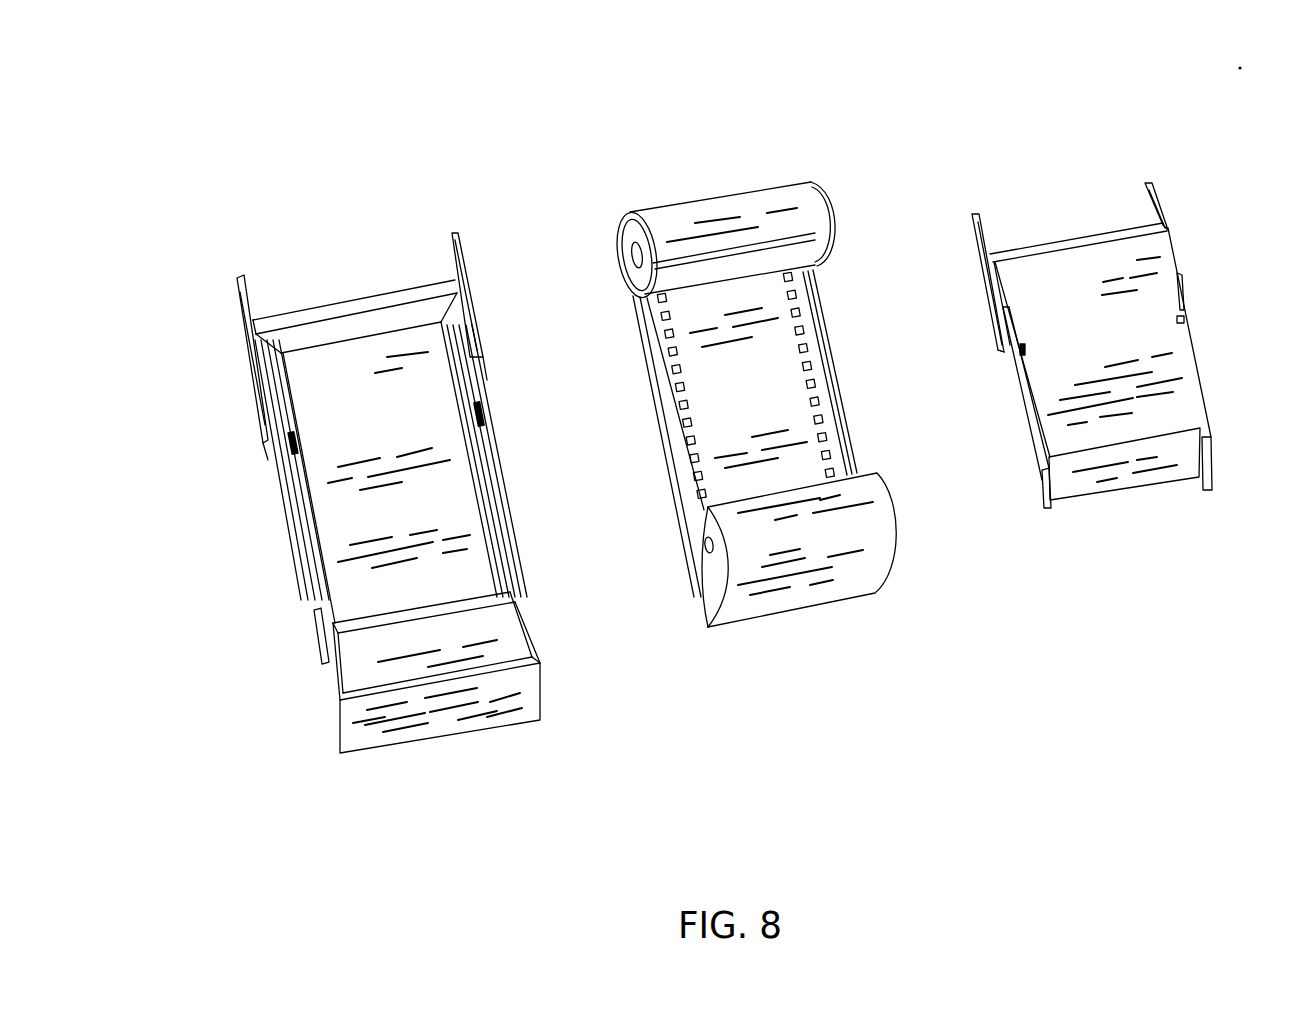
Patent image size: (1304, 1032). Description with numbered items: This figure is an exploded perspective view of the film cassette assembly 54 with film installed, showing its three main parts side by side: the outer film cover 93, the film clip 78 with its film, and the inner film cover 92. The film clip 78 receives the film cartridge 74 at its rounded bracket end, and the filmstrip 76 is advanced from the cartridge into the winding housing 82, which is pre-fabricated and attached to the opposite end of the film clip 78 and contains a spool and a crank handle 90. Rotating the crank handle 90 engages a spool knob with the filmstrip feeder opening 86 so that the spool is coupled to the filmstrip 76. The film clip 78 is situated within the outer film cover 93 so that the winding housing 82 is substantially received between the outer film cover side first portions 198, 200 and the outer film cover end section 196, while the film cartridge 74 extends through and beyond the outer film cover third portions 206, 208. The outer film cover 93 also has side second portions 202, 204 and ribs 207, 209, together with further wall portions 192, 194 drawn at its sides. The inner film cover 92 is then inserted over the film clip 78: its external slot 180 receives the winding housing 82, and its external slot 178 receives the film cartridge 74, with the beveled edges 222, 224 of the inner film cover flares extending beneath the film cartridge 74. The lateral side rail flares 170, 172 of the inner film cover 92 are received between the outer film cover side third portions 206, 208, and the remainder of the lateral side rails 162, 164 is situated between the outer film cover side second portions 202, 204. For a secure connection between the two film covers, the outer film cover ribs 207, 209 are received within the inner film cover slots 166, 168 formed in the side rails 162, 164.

The outer film cover 93 is at (340, 192).
The outer film cover third portion 206 is at (472, 277).
The outer film cover third portion 208 is at (240, 318).
The outer film cover rib 209 is at (295, 440).
The outer film cover rib 207 is at (478, 415).
The outer film cover side second portion 204 is at (282, 490).
The outer film cover side second portion 202 is at (500, 428).
The side wall 194 is at (292, 522).
The side wall 192 is at (508, 487).
The outer film cover side first portion 198 is at (535, 618).
The outer film cover side first portion 200 is at (333, 668).
The outer film cover end section 196 is at (447, 722).
The film cassette assembly 54 is at (903, 665).
The film clip 78 is at (715, 210).
The film cartridge 74 is at (630, 285).
The filmstrip 76 is at (763, 407).
The filmstrip feeder opening 86 is at (818, 380).
The winding housing 82 is at (798, 594).
The crank handle 90 is at (707, 548).
The inner film cover 92 is at (1052, 130).
The external slot 178 is at (1090, 232).
The beveled edge 224 is at (985, 230).
The beveled edge 222 is at (1163, 205).
The lateral side rail flare 170 is at (982, 270).
The inner film cover slot 166 is at (1027, 350).
The lateral side rail 162 is at (1028, 440).
The lateral side rail flare 172 is at (1182, 245).
The inner film cover slot 168 is at (1185, 320).
The lateral side rail 164 is at (1215, 395).
The external slot 180 is at (1128, 505).